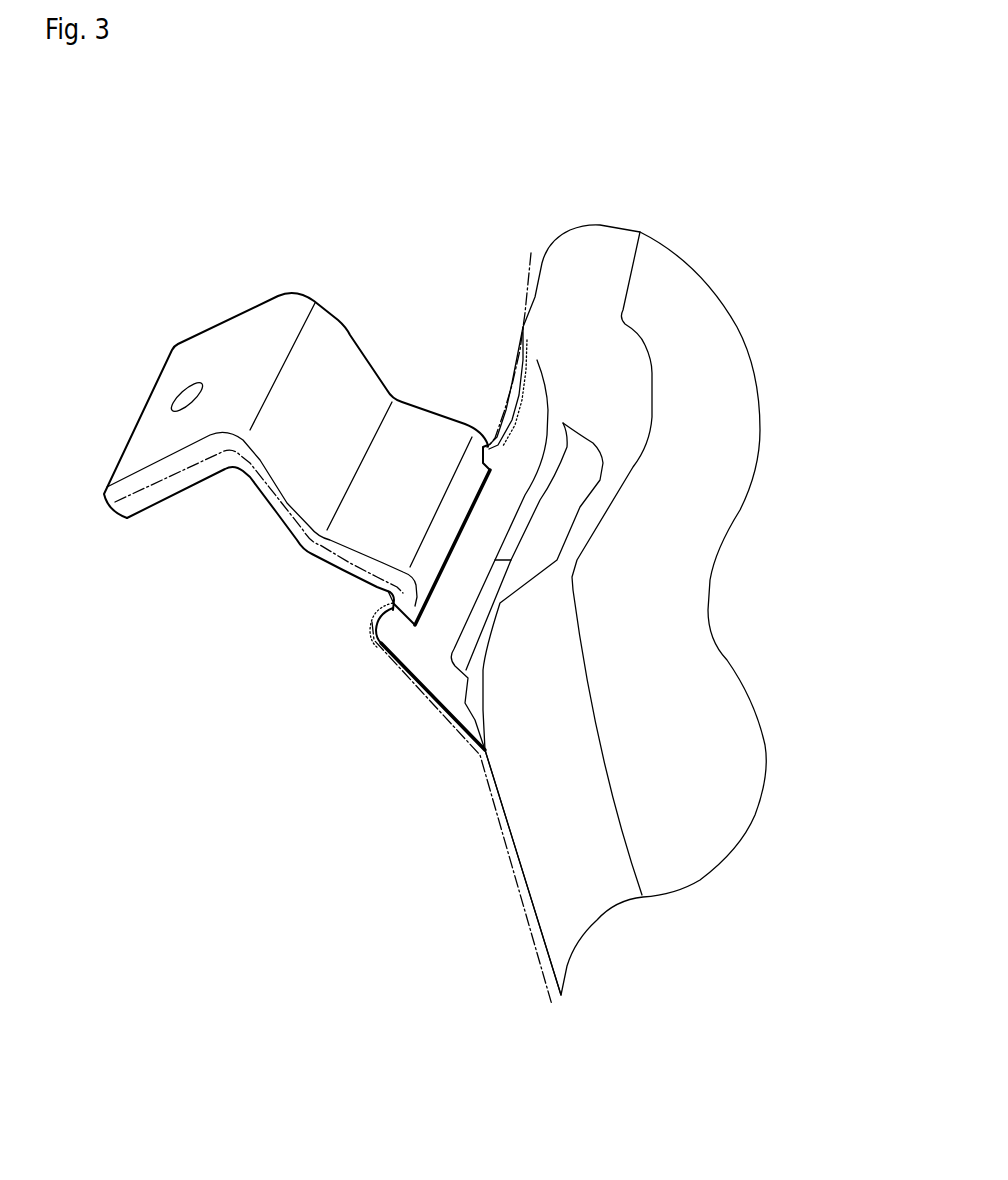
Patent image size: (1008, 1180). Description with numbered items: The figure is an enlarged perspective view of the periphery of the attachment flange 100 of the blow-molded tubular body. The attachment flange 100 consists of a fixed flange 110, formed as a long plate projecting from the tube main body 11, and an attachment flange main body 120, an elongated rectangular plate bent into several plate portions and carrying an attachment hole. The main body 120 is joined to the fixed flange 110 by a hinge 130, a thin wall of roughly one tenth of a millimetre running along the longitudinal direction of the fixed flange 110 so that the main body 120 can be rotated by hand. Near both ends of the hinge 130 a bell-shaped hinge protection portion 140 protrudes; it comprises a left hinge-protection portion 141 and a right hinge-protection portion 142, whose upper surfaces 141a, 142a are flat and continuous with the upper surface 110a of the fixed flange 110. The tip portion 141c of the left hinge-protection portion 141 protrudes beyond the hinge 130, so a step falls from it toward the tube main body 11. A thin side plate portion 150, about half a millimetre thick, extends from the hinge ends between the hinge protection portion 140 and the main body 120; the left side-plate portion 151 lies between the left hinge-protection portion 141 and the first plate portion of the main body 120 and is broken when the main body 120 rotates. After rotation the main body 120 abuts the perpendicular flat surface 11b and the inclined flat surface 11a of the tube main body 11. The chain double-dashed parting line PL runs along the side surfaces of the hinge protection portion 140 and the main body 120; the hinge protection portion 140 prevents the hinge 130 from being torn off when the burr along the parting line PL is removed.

The attachment flange 100 is at (465, 440).
The attachment flange main body 120 is at (190, 373).
The hinge 130 is at (453, 563).
The hinge protection portion 140 is at (360, 440).
The left hinge-protection portion 141 is at (339, 695).
The upper surface of left hinge-protection portion 141a is at (386, 641).
The tip portion of left hinge-protection portion 141c is at (383, 633).
The right hinge-protection portion 142 is at (453, 290).
The upper surface of right hinge-protection portion 142a is at (489, 450).
The side plate portion 150 is at (392, 604).
The left side-plate portion 151 is at (286, 578).
The tube main body 11 is at (596, 610).
The fixed flange 110 is at (665, 543).
The upper surface of fixed flange 110a is at (508, 497).
The inclined flat surface 11a is at (547, 775).
The perpendicular flat surface 11b is at (505, 613).
The parting line PL is at (530, 933).